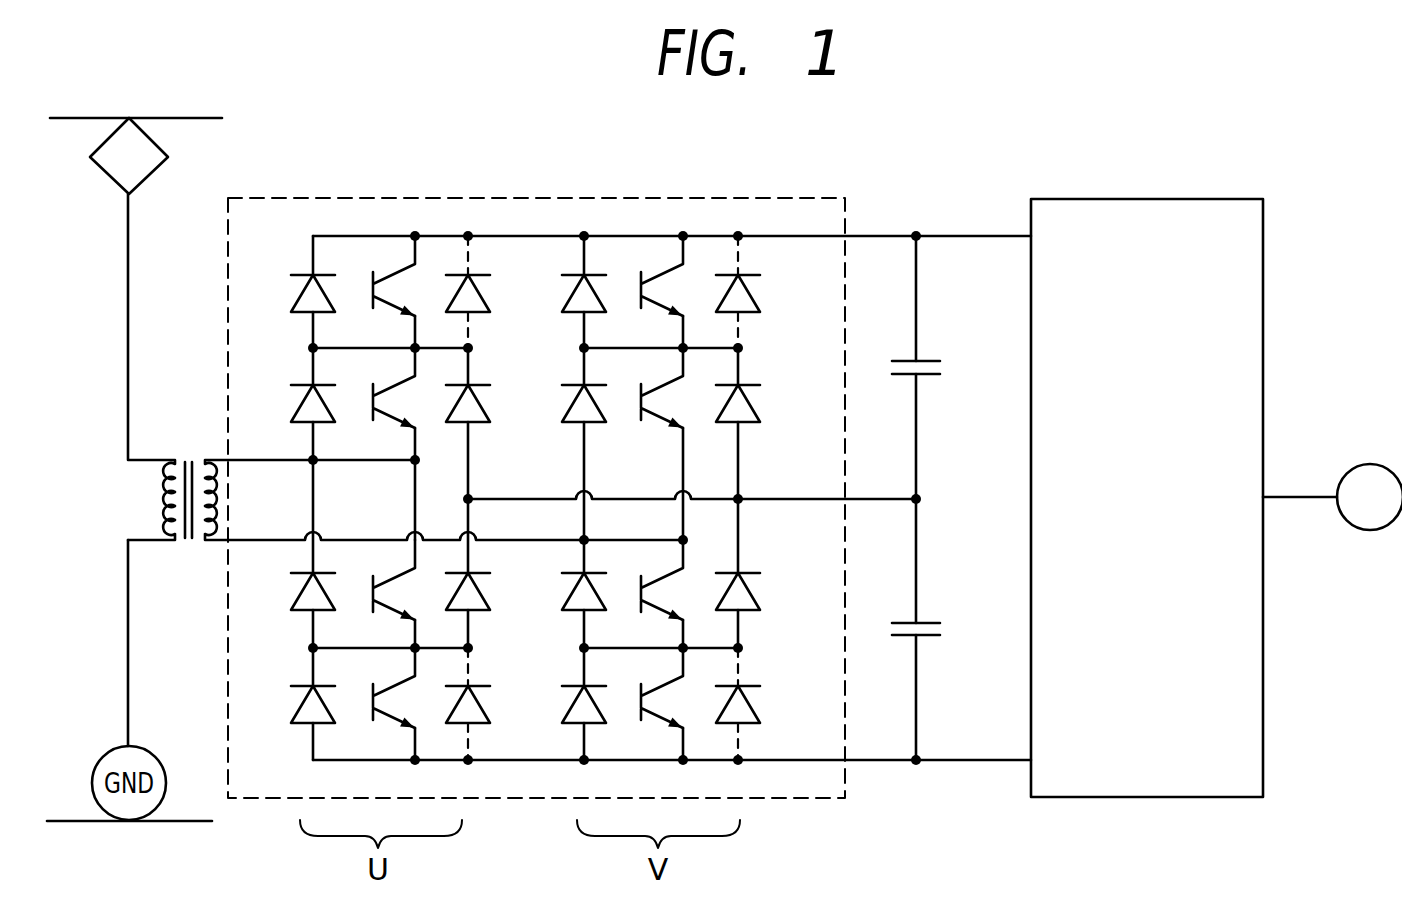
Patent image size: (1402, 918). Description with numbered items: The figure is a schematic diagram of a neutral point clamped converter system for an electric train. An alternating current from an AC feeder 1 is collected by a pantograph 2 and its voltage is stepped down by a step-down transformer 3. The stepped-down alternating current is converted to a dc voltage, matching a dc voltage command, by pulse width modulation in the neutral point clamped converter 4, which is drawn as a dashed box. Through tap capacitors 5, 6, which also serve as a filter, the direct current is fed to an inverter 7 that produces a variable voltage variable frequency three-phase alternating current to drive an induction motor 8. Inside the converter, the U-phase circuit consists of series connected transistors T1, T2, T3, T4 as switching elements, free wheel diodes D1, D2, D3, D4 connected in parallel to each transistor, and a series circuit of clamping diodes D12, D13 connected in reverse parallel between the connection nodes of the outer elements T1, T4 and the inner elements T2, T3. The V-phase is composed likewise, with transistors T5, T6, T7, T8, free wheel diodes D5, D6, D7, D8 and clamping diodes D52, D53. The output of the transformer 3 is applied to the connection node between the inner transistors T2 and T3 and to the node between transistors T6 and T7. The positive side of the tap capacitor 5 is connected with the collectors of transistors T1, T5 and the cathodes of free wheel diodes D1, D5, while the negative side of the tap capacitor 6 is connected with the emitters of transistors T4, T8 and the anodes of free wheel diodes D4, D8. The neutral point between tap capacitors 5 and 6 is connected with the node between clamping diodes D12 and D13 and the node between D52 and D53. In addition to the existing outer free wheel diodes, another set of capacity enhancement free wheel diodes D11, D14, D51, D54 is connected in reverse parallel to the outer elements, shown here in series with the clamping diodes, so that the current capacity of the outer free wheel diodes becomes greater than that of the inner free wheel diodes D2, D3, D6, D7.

The AC feeder 1 is at (176, 118).
The pantograph 2 is at (108, 176).
The step-down transformer 3 is at (185, 455).
The neutral point clamped converter 4 is at (777, 197).
The tap capacitor 5 is at (928, 361).
The tap capacitor 6 is at (928, 623).
The inverter 7 is at (1190, 199).
The induction motor 8 is at (1370, 463).
The free wheel diode D1 is at (302, 314).
The free wheel diode D2 is at (297, 411).
The free wheel diode D3 is at (298, 598).
The free wheel diode D4 is at (301, 706).
The free wheel diode D5 is at (567, 301).
The free wheel diode D6 is at (568, 413).
The free wheel diode D7 is at (567, 601).
The free wheel diode D8 is at (569, 712).
The capacity enhancement free wheel diode D11 is at (481, 294).
The clamping diode D12 is at (481, 405).
The clamping diode D13 is at (481, 593).
The capacity enhancement free wheel diode D14 is at (481, 706).
The capacity enhancement free wheel diode D51 is at (752, 296).
The clamping diode D52 is at (752, 409).
The clamping diode D53 is at (752, 596).
The capacity enhancement free wheel diode D54 is at (752, 709).
The transistor T1 is at (372, 283).
The transistor T2 is at (372, 395).
The transistor T3 is at (372, 588).
The transistor T4 is at (372, 695).
The transistor T5 is at (640, 285).
The transistor T6 is at (640, 395).
The transistor T7 is at (640, 588).
The transistor T8 is at (640, 694).